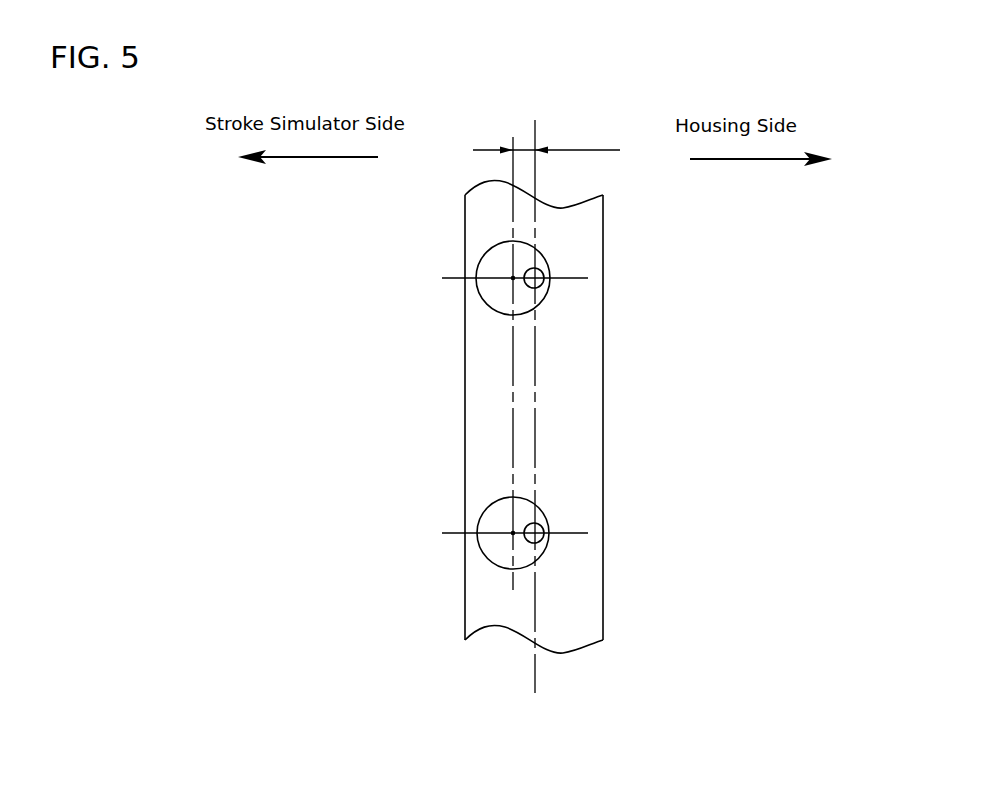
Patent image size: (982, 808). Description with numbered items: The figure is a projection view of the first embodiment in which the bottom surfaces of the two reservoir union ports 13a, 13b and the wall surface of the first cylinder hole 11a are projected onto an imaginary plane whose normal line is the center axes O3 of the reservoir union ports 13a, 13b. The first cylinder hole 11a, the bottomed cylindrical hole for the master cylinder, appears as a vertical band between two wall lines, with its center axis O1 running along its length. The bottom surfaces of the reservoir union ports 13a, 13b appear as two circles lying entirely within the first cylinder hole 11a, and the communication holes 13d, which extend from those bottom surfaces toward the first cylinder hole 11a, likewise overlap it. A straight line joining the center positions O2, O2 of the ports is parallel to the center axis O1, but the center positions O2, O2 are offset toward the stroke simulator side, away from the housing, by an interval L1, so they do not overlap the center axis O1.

The first cylinder hole 11a is at (603, 382).
The reservoir union port 13a is at (477, 520).
The reservoir union port 13b is at (477, 265).
The communication hole 13d is at (549, 273).
The center axis of the first cylinder hole O1 is at (535, 394).
The center position of the reservoir union port bottom surface O2 is at (509, 280).
The center axis of the reservoir union ports O3 is at (452, 471).
The interval L1 is at (546, 139).